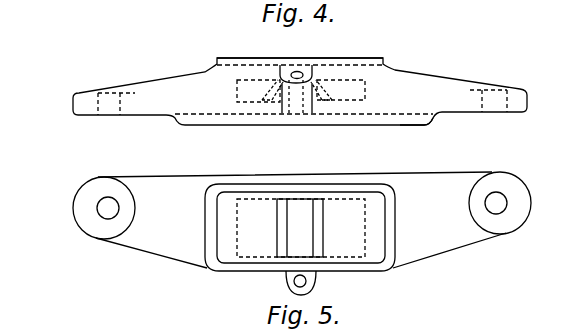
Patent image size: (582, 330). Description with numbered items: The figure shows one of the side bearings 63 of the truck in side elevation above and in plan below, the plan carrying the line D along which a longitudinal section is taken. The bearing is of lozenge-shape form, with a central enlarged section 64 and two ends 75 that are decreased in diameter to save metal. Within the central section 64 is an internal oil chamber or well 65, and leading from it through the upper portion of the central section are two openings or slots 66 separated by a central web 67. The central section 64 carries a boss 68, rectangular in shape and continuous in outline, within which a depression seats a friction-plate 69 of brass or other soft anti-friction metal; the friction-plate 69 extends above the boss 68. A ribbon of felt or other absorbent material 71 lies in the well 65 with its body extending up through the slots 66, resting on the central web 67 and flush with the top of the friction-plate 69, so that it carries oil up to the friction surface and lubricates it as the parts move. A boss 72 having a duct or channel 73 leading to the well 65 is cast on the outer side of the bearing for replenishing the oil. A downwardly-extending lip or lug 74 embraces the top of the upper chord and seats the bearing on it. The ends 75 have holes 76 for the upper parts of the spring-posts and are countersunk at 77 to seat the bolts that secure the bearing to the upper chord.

In FIG. 4, the side bearing 63 is at (300, 94).
In FIG. 4, the central enlarged section 64 is at (240, 91).
In FIG. 4, the oil chamber or well 65 is at (341, 90).
In FIG. 5, the openings or slots 66 is at (317, 210).
In FIG. 5, the central web 67 is at (297, 207).
In FIG. 5, the boss 68 is at (203, 222).
In FIG. 4, the friction-plate 69 is at (379, 63).
In FIG. 5, the friction-plate 69 is at (301, 228).
In FIG. 4, the ribbon of felt or absorbent material 71 is at (276, 82).
In FIG. 4, the boss 72 is at (347, 98).
In FIG. 5, the boss 72 is at (320, 250).
In FIG. 4, the duct or channel 73 is at (299, 70).
In FIG. 5, the duct or channel 73 is at (296, 284).
In FIG. 4, the lip or lug 74 is at (397, 118).
In FIG. 4, the ends 75 is at (147, 105).
In FIG. 5, the ends 75 is at (152, 246).
In FIG. 5, the holes 76 is at (108, 212).
In FIG. 5, the recess or countersink 77 is at (92, 189).
In FIG. 5, the section line D D is at (93, 205).